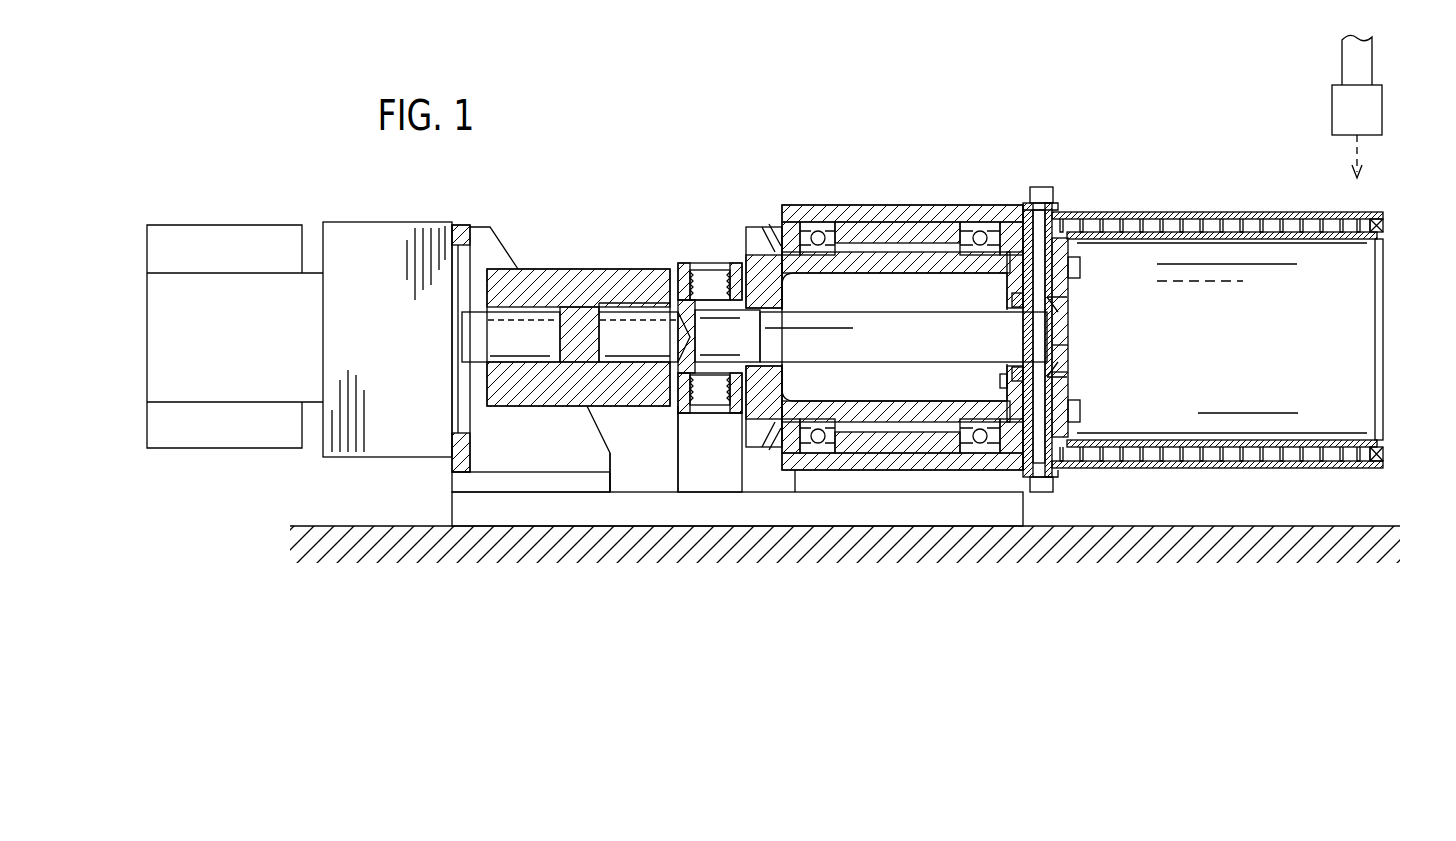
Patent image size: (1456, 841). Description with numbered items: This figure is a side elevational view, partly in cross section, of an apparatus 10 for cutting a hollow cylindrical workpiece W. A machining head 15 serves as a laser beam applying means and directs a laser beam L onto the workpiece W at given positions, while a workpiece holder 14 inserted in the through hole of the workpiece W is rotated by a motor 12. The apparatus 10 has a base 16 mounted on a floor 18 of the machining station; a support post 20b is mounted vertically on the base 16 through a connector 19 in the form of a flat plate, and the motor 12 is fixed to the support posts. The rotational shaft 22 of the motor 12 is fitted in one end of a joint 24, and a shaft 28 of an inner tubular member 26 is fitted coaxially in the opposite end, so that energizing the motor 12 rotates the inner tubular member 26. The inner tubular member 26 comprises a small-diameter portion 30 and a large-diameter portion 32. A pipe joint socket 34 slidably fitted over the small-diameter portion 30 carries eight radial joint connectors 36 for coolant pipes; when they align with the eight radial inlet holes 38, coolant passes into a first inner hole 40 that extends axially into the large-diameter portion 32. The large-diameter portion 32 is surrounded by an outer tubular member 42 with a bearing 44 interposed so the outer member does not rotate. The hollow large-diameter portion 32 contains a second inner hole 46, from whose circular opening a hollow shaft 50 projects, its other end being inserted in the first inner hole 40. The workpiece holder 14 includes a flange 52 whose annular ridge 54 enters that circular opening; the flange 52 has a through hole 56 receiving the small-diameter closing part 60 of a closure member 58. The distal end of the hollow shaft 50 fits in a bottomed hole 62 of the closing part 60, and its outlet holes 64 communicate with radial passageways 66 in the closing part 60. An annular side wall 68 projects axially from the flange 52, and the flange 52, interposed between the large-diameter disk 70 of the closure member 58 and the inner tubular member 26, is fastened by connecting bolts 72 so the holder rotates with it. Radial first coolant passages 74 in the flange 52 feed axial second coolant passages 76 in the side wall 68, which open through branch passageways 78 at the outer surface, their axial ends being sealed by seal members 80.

The apparatus 10 is at (262, 178).
The motor 12 is at (226, 292).
The workpiece holder 14 is at (1098, 142).
The machining head 15 is at (1345, 105).
The base 16 is at (460, 511).
The floor 18 is at (1250, 546).
The connector 19 is at (460, 486).
The support post 20b is at (587, 428).
The rotational shaft 22 is at (550, 326).
The joint 24 is at (637, 290).
The inner tubular member 26 is at (648, 190).
The shaft 28 is at (655, 318).
The small-diameter portion 30 is at (710, 324).
The large-diameter portion 32 is at (765, 253).
The pipe joint socket 34 is at (683, 410).
The joint connectors 36 is at (697, 407).
The inlet holes 38 is at (690, 306).
The first inner hole 40 is at (793, 398).
The outer tubular member 42 is at (898, 211).
The bearing 44 is at (985, 232).
The second inner hole 46 is at (856, 278).
The hollow shaft 50 is at (910, 334).
The flange 52 is at (1042, 187).
The annular ridge 54 is at (1022, 224).
The through hole 56 is at (1000, 382).
The closure member 58 is at (1132, 350).
The small-diameter closing part 60 is at (1063, 378).
The bottomed hole 62 is at (1068, 330).
The outlet holes 64 is at (1052, 338).
The passageways 66 is at (1012, 297).
The annular side wall 68 is at (1055, 225).
The large-diameter disk 70 is at (1063, 352).
The connecting bolts 72 is at (1080, 268).
The first coolant passages 74 is at (1075, 244).
The second coolant passages 76 is at (1357, 239).
The branch passageways 78 is at (1150, 212).
The seal members 80 is at (1385, 226).
The laser beam L is at (1355, 155).
The hollow cylindrical workpiece W is at (1355, 468).